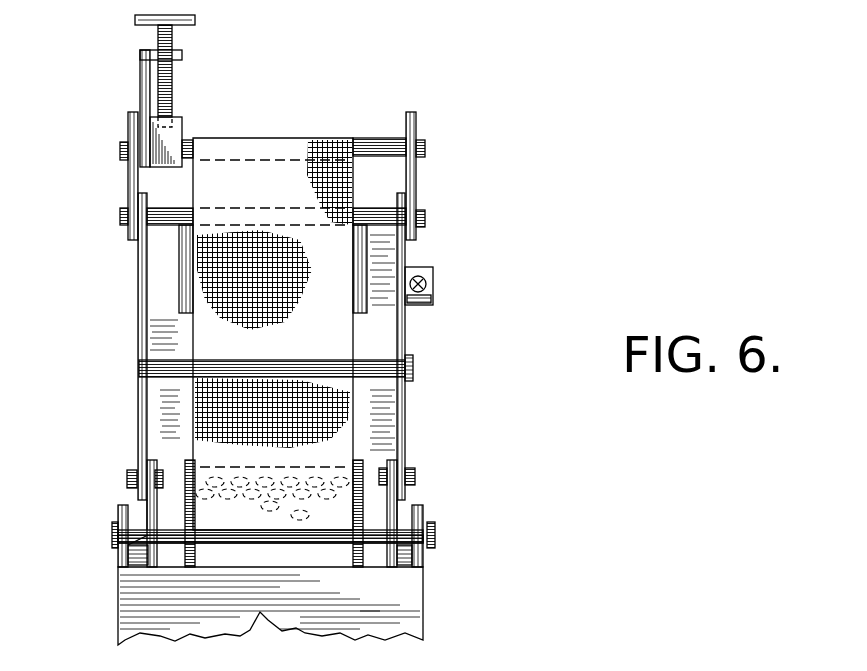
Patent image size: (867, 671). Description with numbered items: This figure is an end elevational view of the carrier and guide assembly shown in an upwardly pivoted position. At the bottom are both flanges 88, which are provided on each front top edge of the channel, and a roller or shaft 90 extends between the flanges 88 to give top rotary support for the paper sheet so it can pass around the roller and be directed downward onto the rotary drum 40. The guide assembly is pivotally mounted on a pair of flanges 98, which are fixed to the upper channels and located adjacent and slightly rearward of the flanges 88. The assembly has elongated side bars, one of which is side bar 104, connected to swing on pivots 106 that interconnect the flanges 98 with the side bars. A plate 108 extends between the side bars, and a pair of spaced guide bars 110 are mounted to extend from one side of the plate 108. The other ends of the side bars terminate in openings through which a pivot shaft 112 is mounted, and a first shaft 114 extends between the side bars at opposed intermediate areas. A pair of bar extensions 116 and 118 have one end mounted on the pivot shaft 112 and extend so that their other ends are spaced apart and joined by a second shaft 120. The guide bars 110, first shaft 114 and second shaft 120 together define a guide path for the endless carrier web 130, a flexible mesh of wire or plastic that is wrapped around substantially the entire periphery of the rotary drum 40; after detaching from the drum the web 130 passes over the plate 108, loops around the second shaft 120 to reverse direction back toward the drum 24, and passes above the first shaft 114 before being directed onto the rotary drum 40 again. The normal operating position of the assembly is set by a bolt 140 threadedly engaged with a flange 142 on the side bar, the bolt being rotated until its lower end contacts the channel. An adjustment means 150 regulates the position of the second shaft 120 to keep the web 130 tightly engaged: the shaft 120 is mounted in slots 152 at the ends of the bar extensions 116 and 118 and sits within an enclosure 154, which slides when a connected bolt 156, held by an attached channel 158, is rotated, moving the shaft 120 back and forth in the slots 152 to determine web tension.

The drum 24 is at (353, 490).
The rotary drum 40 is at (283, 555).
The flange 88 is at (118, 512).
The roller or shaft 90 is at (128, 548).
The flange 98 is at (147, 498).
The side bar 104 is at (140, 288).
The pivot 106 is at (130, 478).
The plate 108 is at (140, 397).
The guide bar 110 is at (185, 262).
The pivot shaft 112 is at (372, 200).
The first shaft 114 is at (372, 365).
The bar extension 116 is at (417, 163).
The bar extension 118 is at (133, 181).
The second shaft 120 is at (369, 143).
The endless carrier web 130 is at (266, 150).
The bolt 140 is at (425, 293).
The flange 142 is at (430, 278).
The adjustment means 150 is at (156, 91).
The slot 152 is at (132, 128).
The enclosure 154 is at (180, 125).
The bolt 156 is at (195, 22).
The channel 158 is at (140, 70).